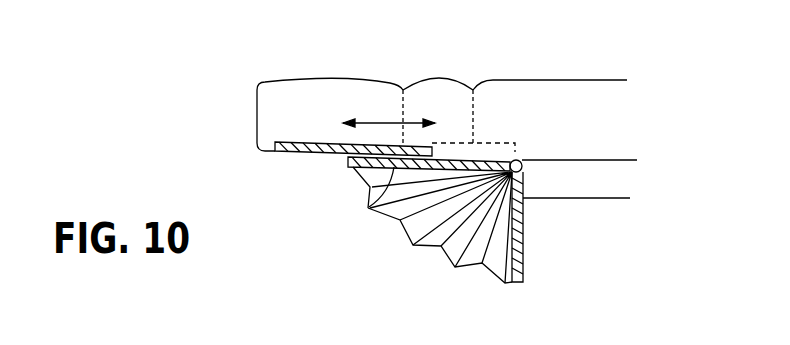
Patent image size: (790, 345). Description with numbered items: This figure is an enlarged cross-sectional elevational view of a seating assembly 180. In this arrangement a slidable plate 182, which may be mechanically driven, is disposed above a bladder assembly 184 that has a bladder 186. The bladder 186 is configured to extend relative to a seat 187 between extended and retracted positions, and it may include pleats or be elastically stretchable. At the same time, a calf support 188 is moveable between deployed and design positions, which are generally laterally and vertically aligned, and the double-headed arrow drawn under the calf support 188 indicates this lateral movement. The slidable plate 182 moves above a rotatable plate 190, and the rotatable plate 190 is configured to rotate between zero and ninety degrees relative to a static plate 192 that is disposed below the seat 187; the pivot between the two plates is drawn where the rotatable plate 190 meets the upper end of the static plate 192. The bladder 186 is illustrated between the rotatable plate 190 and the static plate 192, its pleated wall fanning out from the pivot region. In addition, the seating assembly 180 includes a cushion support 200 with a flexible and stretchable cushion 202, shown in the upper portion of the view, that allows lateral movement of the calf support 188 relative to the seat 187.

The seating assembly 180 is at (548, 48).
The slidable plate 182 is at (323, 153).
The bladder assembly 184 is at (400, 262).
The bladder 186 is at (443, 258).
The seat 187 is at (603, 95).
The calf support 188 is at (297, 102).
The rotatable plate 190 is at (368, 209).
The static plate 192 is at (523, 258).
The cushion support 200 is at (493, 97).
The cushion 202 is at (438, 93).